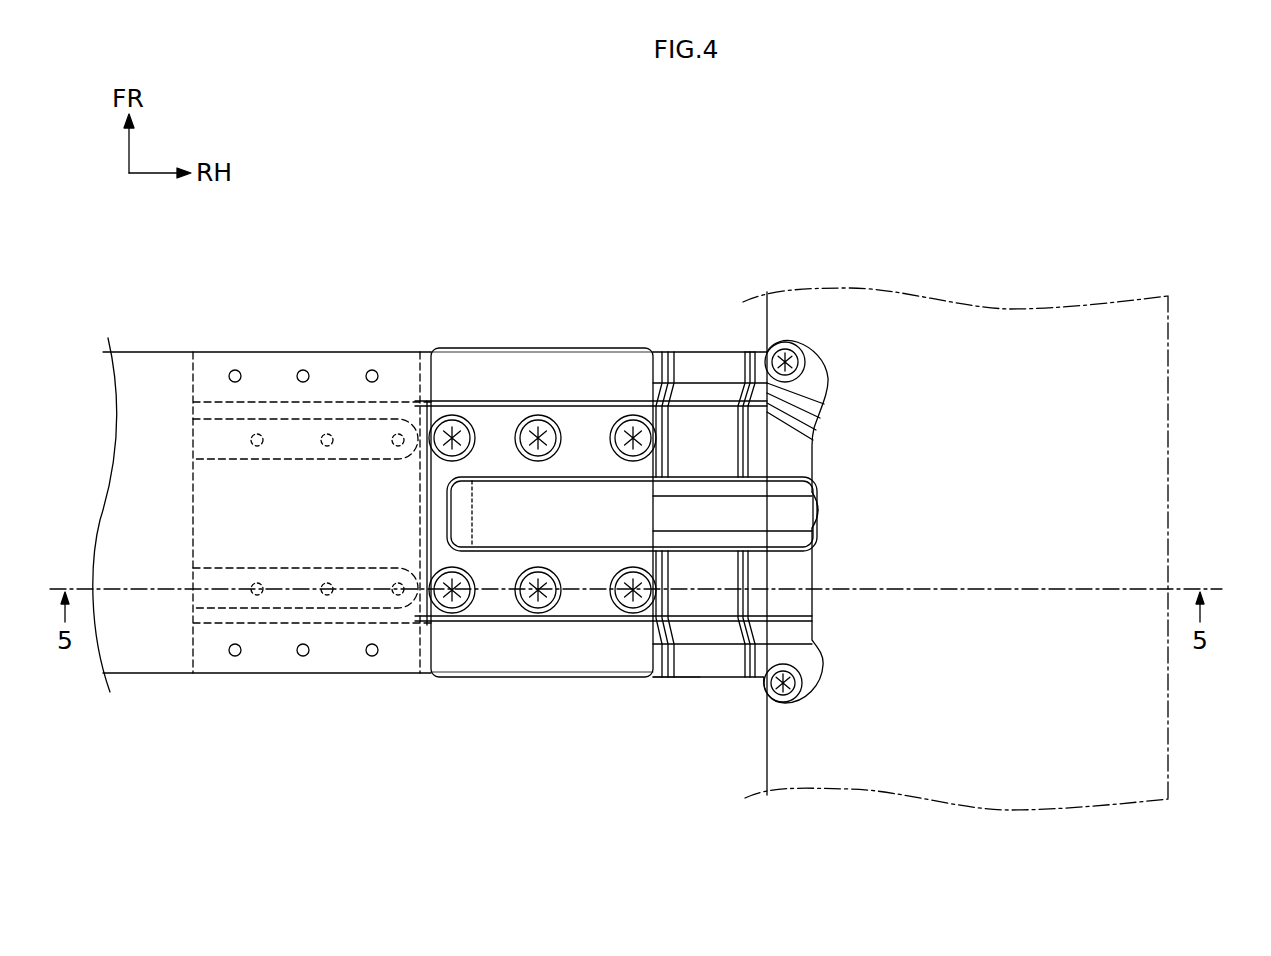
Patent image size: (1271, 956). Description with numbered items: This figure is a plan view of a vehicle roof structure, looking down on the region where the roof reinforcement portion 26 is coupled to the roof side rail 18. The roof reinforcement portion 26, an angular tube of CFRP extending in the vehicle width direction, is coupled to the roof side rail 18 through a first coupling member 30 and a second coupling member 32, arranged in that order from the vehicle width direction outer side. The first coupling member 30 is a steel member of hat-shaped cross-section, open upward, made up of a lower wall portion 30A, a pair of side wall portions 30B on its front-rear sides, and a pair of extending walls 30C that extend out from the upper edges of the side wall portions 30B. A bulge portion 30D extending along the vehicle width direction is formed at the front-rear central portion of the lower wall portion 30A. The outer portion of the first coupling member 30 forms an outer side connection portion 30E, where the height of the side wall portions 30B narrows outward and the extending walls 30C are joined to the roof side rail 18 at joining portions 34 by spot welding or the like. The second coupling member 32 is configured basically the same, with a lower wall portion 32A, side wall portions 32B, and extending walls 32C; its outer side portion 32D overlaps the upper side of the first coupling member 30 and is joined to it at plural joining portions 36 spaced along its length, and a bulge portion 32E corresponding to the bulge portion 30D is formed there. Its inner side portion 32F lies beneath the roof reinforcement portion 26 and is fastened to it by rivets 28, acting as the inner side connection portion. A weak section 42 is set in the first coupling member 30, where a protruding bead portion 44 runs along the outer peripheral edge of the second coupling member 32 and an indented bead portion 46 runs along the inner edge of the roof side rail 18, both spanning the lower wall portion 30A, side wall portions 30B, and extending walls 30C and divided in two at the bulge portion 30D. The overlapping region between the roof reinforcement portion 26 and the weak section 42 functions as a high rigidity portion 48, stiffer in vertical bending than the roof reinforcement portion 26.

The roof side rail 18 is at (1170, 420).
The roof reinforcement portion 26 is at (150, 380).
The rivets 28 is at (235, 370).
The first coupling member 30 is at (698, 695).
The lower wall portion 30A is at (712, 452).
The side wall portions 30B is at (700, 390).
The extending walls 30C is at (814, 389).
The bulge portion 30D is at (793, 508).
The outer side connection portion 30E is at (793, 599).
The second coupling member 32 is at (487, 679).
The lower wall portion 32A is at (496, 503).
The side wall portions 32B is at (483, 408).
The extending walls 32C is at (485, 360).
The outer side portion 32D is at (518, 682).
The bulge portion 32E is at (460, 523).
The inner side portion 32F is at (193, 623).
The joining portions 34 is at (800, 350).
The joining portions 36 is at (450, 415).
The weak section 42 is at (713, 280).
The bead portion 44 is at (668, 675).
The bead portion 46 is at (745, 365).
The high rigidity portion 48 is at (550, 272).